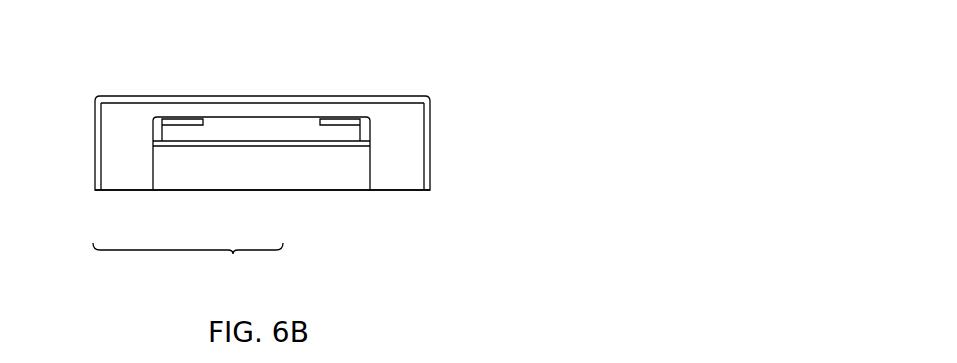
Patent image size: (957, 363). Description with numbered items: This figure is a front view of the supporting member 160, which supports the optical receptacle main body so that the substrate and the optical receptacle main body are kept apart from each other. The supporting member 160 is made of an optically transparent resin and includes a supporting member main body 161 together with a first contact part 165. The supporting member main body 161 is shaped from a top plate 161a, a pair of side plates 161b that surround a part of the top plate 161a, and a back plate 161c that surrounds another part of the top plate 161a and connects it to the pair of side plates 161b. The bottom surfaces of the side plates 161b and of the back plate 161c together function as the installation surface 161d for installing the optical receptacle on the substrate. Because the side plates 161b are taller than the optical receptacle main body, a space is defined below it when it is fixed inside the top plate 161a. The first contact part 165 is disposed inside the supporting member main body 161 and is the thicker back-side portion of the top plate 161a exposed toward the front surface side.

The supporting member 160 is at (555, 86).
The supporting member main body 161 is at (188, 264).
The top plate 161a is at (228, 102).
The side plate 161b is at (110, 180).
The back plate 161c is at (173, 180).
The installation surface 161d is at (382, 188).
The first contact part 165 is at (292, 130).